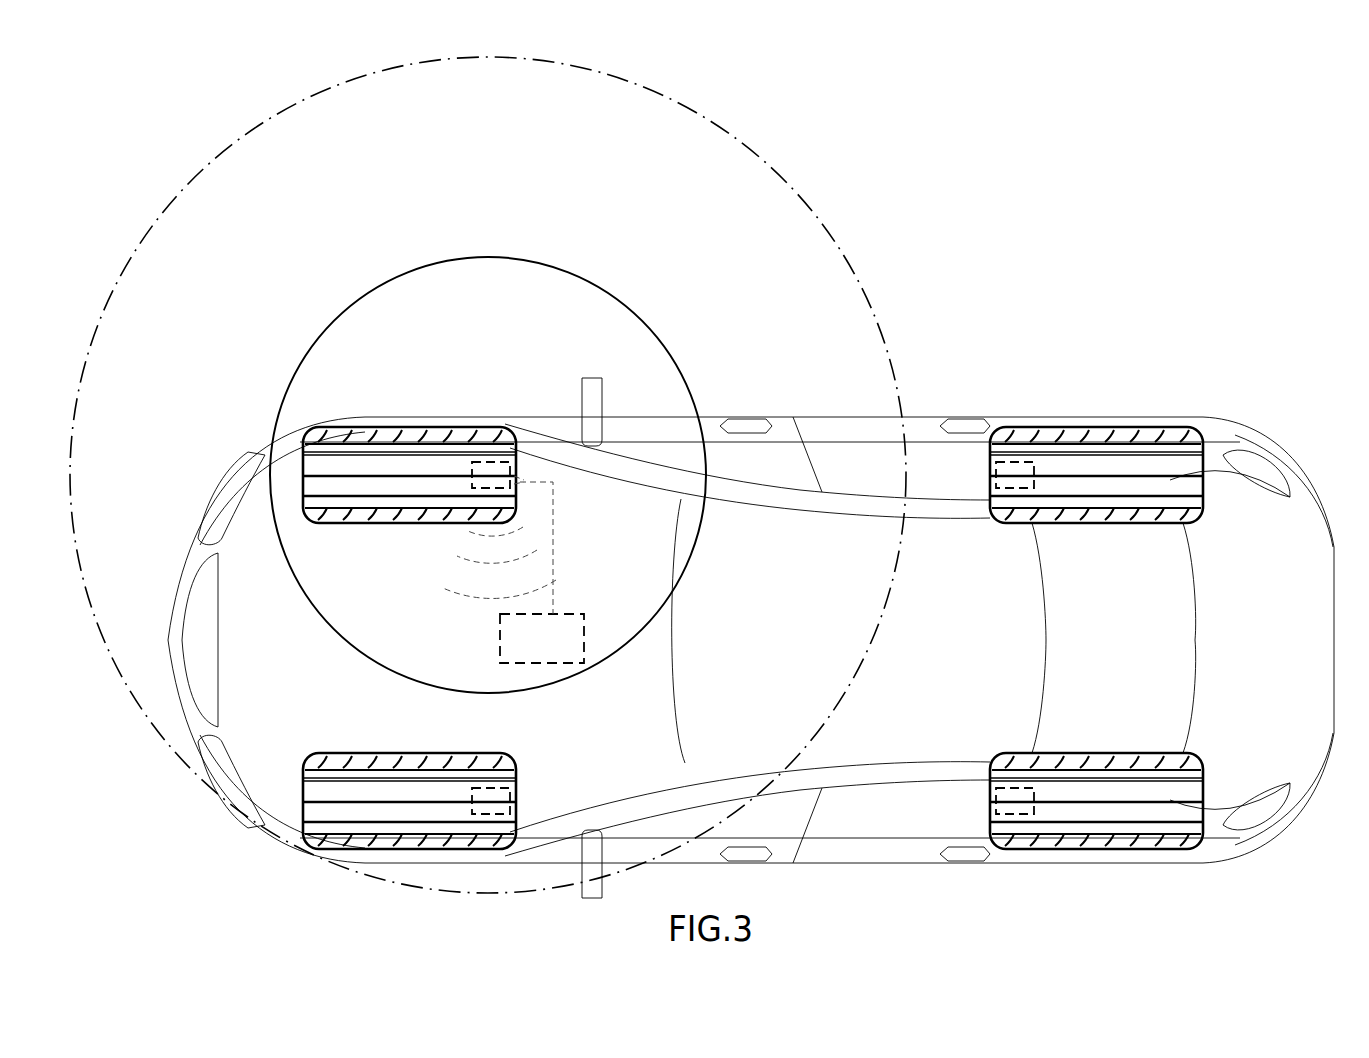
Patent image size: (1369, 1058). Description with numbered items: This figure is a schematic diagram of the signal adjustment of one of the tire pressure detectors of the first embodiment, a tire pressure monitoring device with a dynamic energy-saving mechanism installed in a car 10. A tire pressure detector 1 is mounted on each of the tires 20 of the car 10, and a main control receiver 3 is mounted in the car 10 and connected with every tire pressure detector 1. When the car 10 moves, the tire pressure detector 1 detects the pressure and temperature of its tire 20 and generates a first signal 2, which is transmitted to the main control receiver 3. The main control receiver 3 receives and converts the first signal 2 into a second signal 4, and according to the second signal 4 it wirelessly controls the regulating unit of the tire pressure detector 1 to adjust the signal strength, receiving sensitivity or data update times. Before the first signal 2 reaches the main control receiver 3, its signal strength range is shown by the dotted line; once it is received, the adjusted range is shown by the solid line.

The car 10 is at (225, 471).
The tire 20 is at (360, 427).
The tire pressure detector 1 is at (493, 460).
The first signal 2 is at (465, 602).
The main control receiver 3 is at (584, 637).
The second signal 4 is at (553, 562).